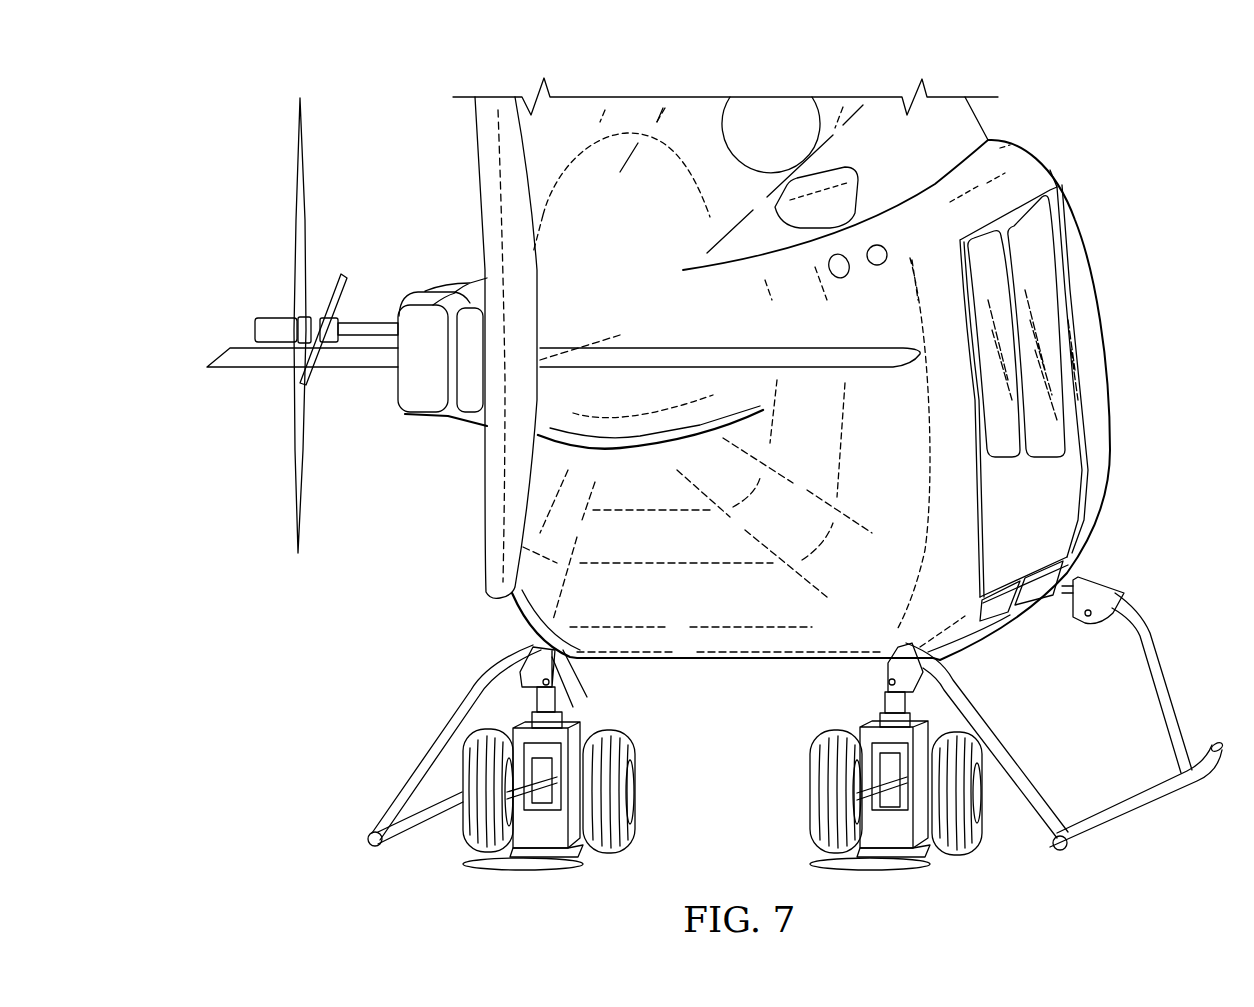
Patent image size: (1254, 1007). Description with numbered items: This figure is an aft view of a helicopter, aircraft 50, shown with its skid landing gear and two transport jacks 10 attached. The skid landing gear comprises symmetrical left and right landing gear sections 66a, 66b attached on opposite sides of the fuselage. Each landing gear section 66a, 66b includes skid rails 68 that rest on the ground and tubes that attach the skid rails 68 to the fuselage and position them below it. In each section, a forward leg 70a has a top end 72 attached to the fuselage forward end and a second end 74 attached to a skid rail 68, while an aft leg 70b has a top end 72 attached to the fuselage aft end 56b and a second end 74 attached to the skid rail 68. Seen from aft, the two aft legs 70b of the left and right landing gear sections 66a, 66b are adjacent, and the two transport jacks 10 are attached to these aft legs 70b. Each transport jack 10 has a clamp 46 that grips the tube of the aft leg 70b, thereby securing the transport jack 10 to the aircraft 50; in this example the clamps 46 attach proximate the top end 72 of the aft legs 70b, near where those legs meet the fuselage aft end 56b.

The transport jack 10 is at (952, 878).
The clamp 46 is at (887, 672).
The aircraft 50 is at (597, 72).
The fuselage aft end 56b is at (685, 607).
The left landing gear section 66a is at (438, 700).
The right landing gear section 66b is at (1150, 605).
The skid rail 68 is at (1118, 822).
The forward leg 70a is at (1165, 672).
The aft leg 70b is at (430, 770).
The top end 72 is at (513, 657).
The second end 74 is at (390, 822).